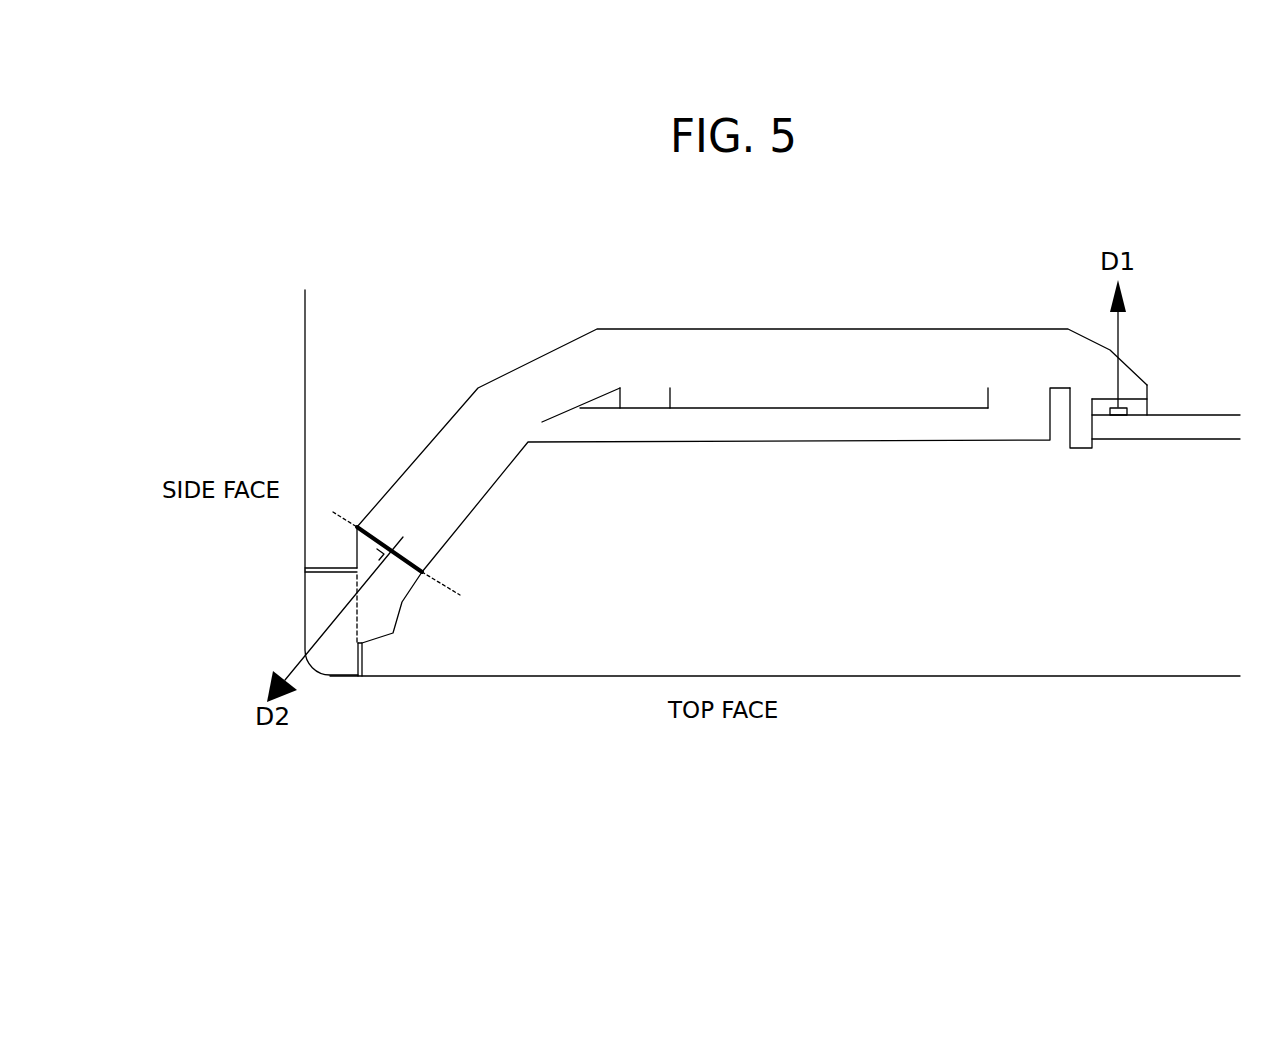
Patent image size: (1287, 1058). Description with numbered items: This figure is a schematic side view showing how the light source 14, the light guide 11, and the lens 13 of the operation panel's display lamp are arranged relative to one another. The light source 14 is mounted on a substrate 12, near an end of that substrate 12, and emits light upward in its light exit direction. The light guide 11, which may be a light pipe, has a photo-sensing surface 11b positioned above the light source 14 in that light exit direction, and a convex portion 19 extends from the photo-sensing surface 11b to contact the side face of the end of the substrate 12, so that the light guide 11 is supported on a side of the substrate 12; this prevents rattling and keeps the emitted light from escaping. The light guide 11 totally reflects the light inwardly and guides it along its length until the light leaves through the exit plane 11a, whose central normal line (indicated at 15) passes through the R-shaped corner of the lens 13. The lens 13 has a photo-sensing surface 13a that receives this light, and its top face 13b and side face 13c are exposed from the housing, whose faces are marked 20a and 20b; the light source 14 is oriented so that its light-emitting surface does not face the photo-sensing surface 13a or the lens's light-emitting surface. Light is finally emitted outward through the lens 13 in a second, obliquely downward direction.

The light guide 11 is at (840, 355).
The exit plane 11a is at (420, 555).
The photo-sensing surface 11b is at (1136, 388).
The substrate 12 is at (1188, 423).
The lens 13 is at (323, 608).
The photo-sensing surface 13a is at (406, 582).
The top face 13b is at (339, 690).
The side face 13c is at (298, 628).
The light source 14 is at (1120, 418).
The virtual line 15 is at (462, 595).
The convex portion 19 is at (1082, 442).
The top face 20a is at (527, 676).
The side face 20b is at (305, 418).